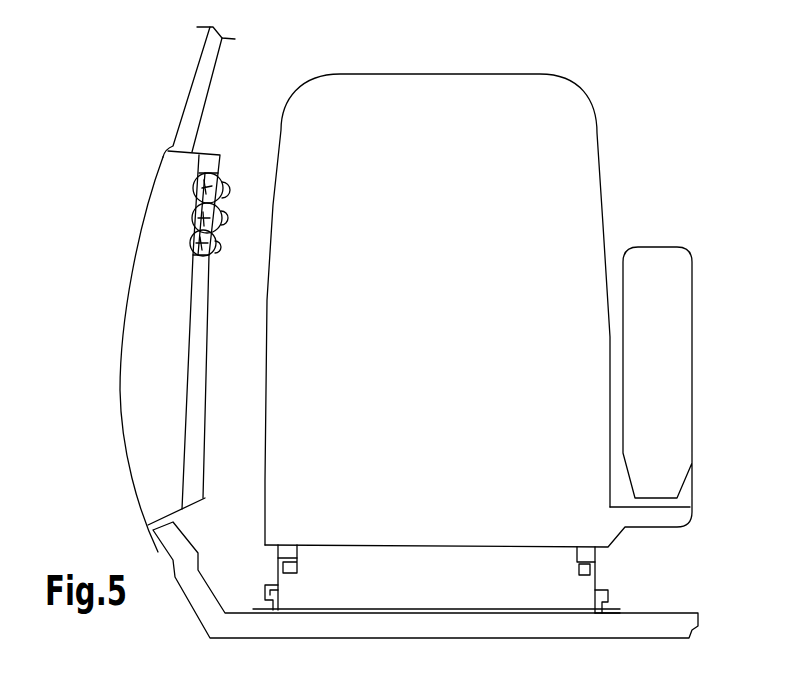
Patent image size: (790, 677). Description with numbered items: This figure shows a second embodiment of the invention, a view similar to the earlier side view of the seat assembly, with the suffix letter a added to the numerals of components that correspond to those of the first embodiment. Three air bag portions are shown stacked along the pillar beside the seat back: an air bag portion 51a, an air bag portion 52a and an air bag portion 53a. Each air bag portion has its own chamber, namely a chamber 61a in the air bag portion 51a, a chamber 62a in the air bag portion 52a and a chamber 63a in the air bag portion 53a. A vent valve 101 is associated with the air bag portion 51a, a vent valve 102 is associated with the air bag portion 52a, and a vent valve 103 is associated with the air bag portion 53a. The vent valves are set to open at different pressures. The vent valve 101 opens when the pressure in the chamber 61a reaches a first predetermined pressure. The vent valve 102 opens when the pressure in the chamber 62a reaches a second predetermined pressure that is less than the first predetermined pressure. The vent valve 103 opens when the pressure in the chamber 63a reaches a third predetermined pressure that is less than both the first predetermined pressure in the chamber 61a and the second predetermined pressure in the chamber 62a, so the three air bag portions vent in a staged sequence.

The vent valve 101 is at (197, 181).
The vent valve 102 is at (192, 216).
The vent valve 103 is at (190, 246).
The air bag portion 51a is at (228, 182).
The chamber 61a is at (232, 193).
The air bag portion 52a is at (225, 214).
The chamber 62a is at (222, 225).
The air bag portion 53a is at (220, 243).
The chamber 63a is at (220, 248).